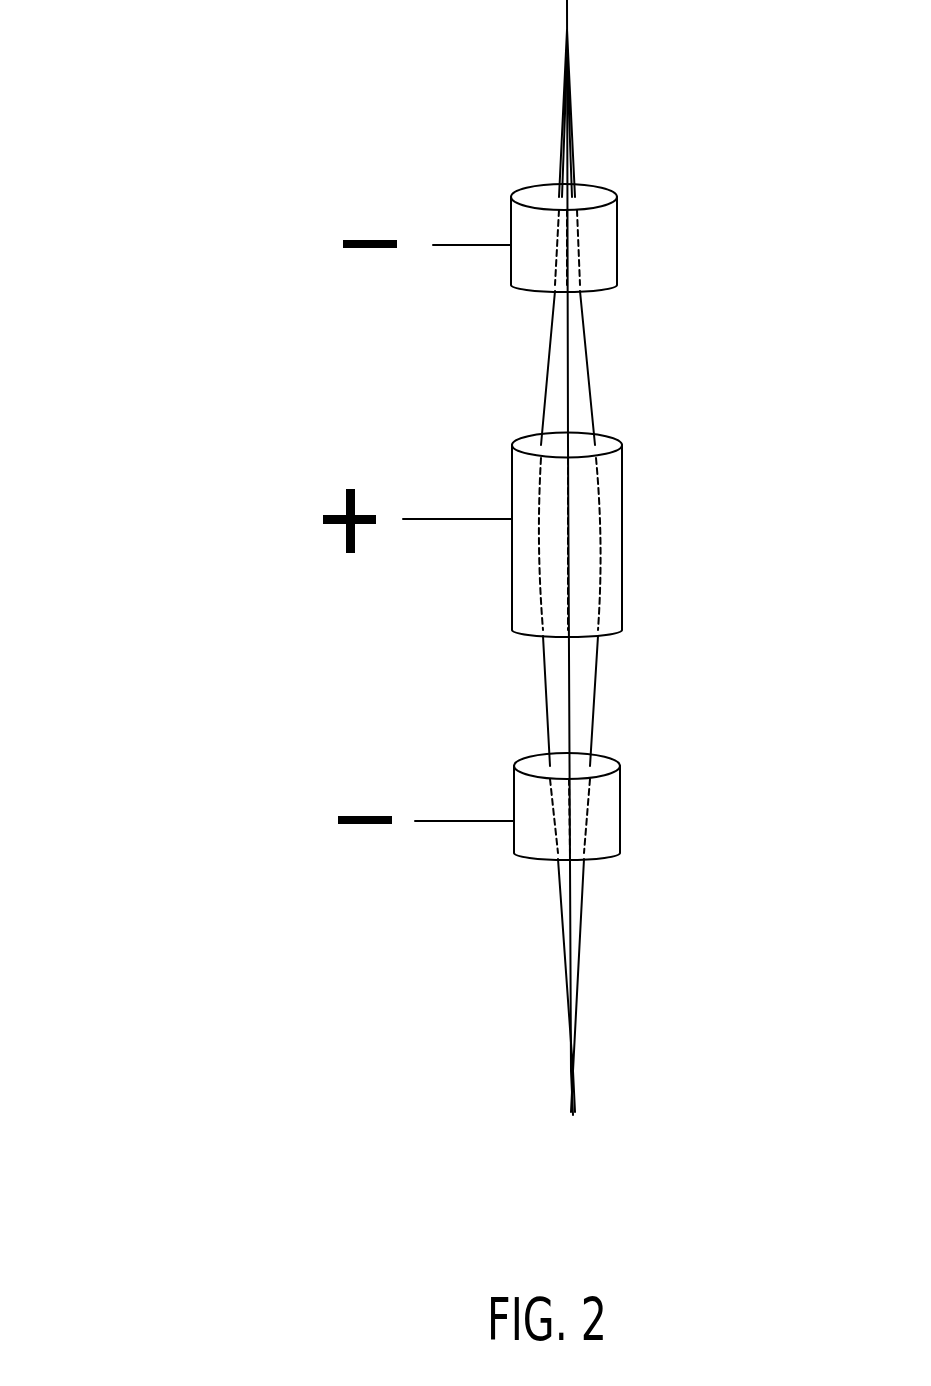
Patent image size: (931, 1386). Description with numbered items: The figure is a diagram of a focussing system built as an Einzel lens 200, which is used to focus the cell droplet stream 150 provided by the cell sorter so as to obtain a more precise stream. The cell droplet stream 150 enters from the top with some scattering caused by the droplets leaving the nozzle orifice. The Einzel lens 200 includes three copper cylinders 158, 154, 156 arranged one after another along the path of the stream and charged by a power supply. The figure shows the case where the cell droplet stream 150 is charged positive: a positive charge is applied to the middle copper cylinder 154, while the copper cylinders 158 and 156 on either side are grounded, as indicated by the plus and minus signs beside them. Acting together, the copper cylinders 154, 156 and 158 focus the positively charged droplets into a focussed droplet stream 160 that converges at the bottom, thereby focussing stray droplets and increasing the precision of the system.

The cell droplet stream 150 is at (588, 147).
The copper cylinder 158 is at (605, 252).
The copper cylinder 154 is at (608, 610).
The copper cylinder 156 is at (608, 838).
The focussed droplet stream 160 is at (582, 1049).
The Einzel lens 200 is at (325, 340).